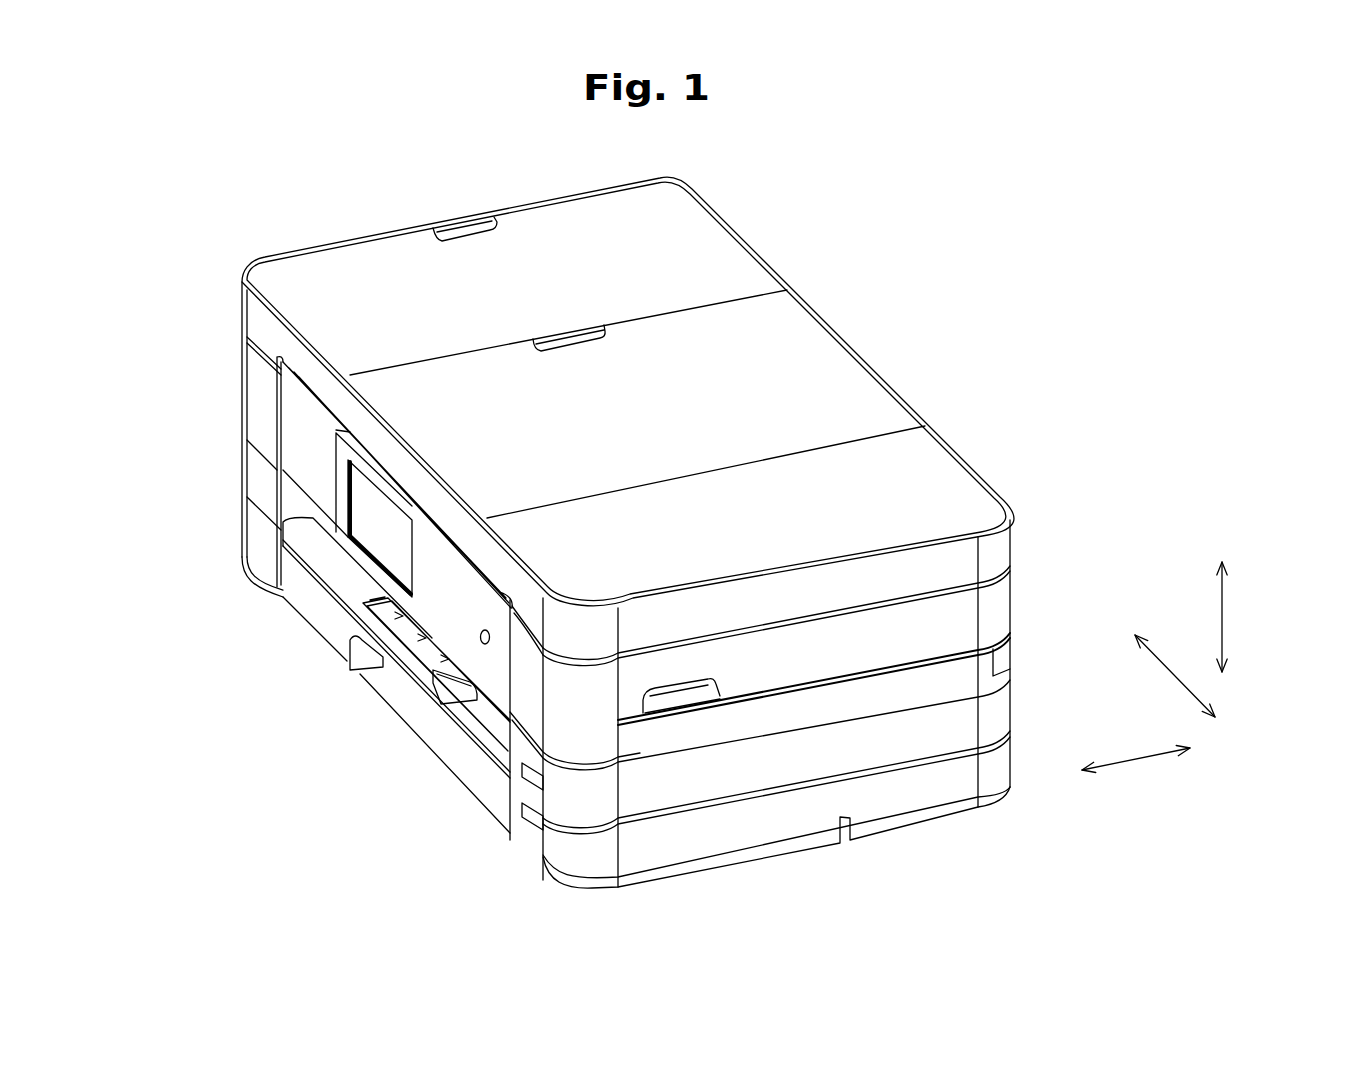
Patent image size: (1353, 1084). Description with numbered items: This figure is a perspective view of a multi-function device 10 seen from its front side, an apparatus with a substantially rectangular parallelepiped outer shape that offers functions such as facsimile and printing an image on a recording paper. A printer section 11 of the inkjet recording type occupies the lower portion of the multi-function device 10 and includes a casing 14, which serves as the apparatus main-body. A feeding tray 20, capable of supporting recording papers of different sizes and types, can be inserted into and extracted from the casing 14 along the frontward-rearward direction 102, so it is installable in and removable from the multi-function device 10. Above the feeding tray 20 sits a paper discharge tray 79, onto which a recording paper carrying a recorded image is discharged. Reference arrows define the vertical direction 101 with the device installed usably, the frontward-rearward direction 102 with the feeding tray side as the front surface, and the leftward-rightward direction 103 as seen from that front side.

The multi-function device 10 is at (858, 300).
The printer section 11 is at (1043, 705).
The casing 14 is at (262, 325).
The feeding tray 20 is at (308, 594).
The paper discharge tray 79 is at (477, 703).
The vertical direction 101 is at (1222, 616).
The frontward-rearward direction 102 is at (1132, 760).
The leftward-rightward direction 103 is at (1170, 670).